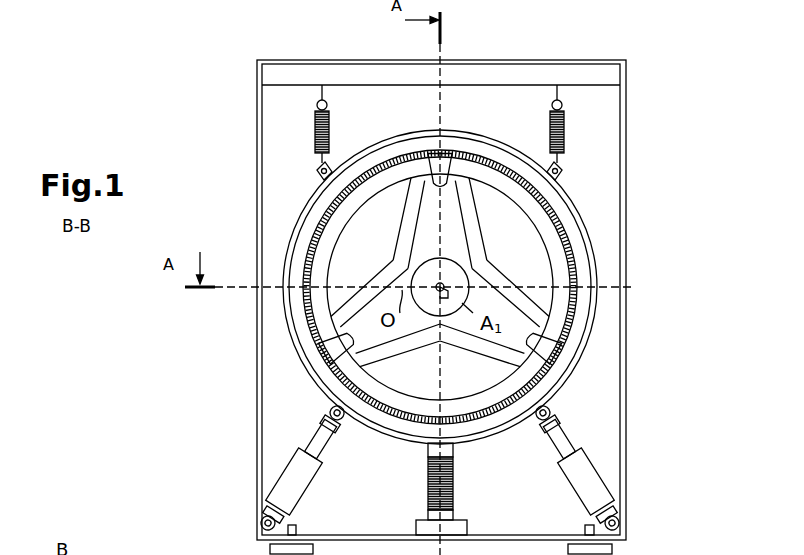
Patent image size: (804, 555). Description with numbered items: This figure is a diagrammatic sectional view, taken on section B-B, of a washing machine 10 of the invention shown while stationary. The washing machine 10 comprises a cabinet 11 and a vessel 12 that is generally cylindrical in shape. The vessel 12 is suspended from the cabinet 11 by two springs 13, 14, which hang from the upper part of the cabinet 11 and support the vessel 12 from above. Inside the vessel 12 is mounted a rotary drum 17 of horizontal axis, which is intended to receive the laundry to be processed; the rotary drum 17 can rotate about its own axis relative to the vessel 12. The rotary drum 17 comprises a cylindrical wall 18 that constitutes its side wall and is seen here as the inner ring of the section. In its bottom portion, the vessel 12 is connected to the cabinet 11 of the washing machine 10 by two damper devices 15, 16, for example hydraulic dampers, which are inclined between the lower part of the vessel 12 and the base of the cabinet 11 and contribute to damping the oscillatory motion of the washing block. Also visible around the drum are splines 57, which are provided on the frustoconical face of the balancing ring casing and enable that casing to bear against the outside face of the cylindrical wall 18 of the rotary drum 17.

The washing machine 10 is at (287, 38).
The cabinet 11 is at (628, 103).
The vessel 12 is at (590, 240).
The spring 13 is at (567, 121).
The spring 14 is at (317, 110).
The damper device 15 is at (563, 478).
The damper device 16 is at (316, 478).
The rotary drum 17 is at (570, 193).
The cylindrical wall 18 is at (437, 152).
The splines 57 is at (563, 352).